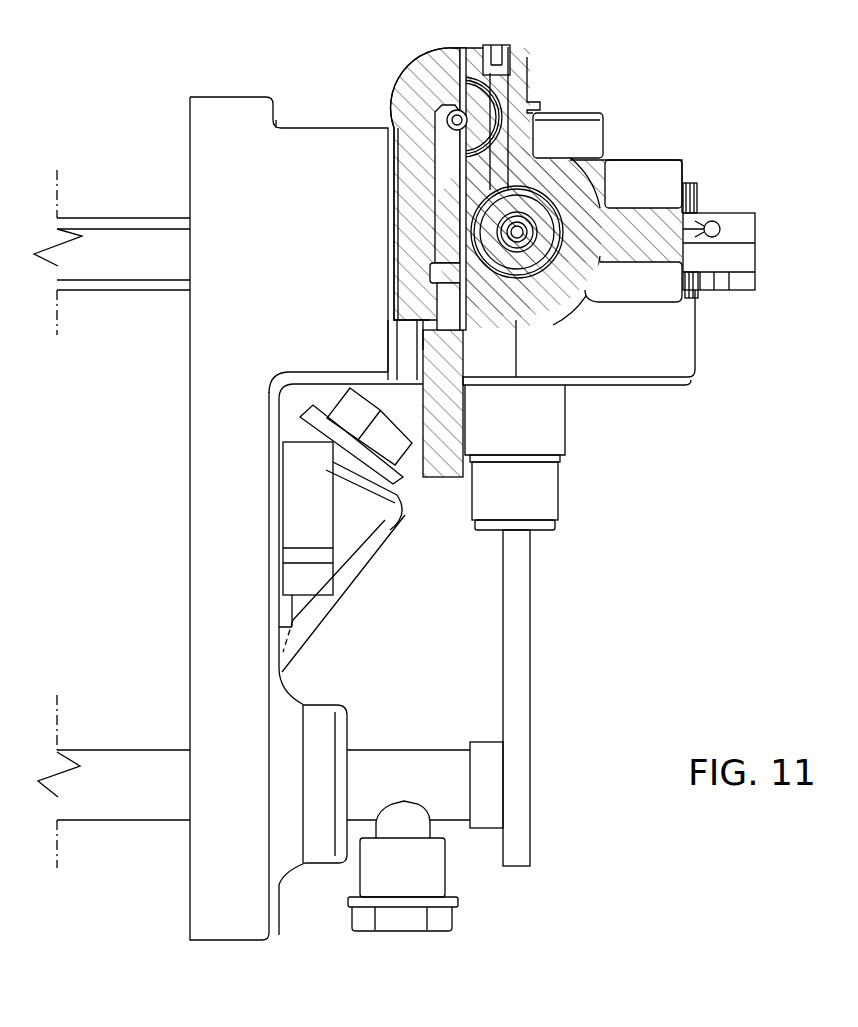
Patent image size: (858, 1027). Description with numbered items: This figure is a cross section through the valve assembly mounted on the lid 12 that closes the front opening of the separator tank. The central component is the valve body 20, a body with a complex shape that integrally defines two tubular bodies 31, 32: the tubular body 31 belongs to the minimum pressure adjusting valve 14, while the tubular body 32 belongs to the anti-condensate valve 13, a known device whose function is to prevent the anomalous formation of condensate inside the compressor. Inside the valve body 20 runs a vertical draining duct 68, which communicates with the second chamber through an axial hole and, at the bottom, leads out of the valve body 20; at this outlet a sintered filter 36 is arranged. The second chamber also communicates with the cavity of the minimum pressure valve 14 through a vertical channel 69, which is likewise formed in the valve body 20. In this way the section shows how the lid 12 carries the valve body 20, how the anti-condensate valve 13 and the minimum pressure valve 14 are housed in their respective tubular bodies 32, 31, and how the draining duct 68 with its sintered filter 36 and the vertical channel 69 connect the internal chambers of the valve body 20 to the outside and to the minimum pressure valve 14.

The lid 12 is at (188, 110).
The anti-condensate valve 13 is at (500, 96).
The minimum pressure adjusting valve 14 is at (560, 147).
The valve body 20 is at (712, 144).
The tubular body 31 is at (567, 285).
The tubular body 32 is at (416, 90).
The sintered filter 36 is at (453, 437).
The vertical draining duct 68 is at (443, 214).
The vertical channel 69 is at (500, 162).